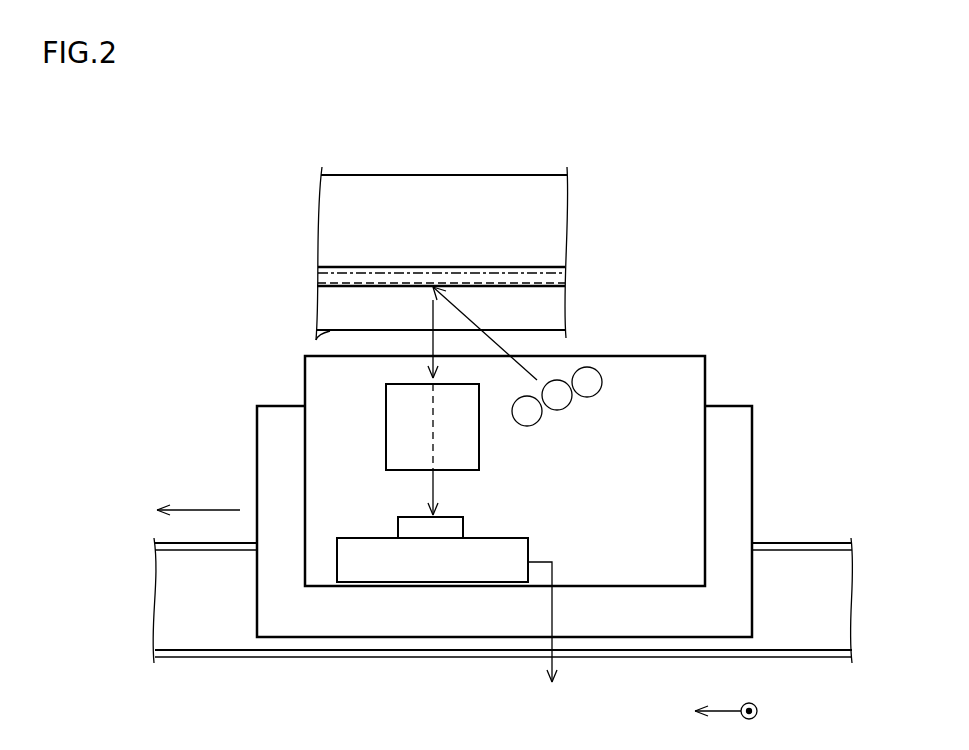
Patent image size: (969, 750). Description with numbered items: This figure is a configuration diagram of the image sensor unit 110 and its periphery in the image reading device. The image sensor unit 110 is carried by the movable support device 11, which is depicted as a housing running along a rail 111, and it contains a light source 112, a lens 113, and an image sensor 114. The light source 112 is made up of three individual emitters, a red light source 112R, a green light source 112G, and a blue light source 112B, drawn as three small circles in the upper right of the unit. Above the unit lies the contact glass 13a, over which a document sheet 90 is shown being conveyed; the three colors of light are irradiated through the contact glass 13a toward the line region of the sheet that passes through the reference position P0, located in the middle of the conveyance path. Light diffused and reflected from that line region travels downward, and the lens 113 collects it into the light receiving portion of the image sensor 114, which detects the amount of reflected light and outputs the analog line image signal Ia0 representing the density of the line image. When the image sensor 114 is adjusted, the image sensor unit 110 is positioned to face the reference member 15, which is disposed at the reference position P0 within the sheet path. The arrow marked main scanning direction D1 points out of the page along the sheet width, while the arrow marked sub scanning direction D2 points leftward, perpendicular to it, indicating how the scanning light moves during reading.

The medium 90 is at (452, 270).
The reference member 15 is at (486, 269).
The reference position P0 is at (431, 277).
The contact glass 13a is at (341, 331).
The movable support device 11 is at (818, 421).
The image sensor unit 110 is at (705, 383).
The guide rail 111 is at (787, 542).
The light source 112 is at (603, 440).
The red light source 112R is at (536, 425).
The green light source 112G is at (569, 408).
The blue light source 112B is at (627, 405).
The lens 113 is at (386, 458).
The image sensor 114 is at (528, 552).
The line image signal Ia0 is at (548, 637).
The main scanning direction D1 is at (760, 698).
The sub scanning direction D2 is at (701, 713).